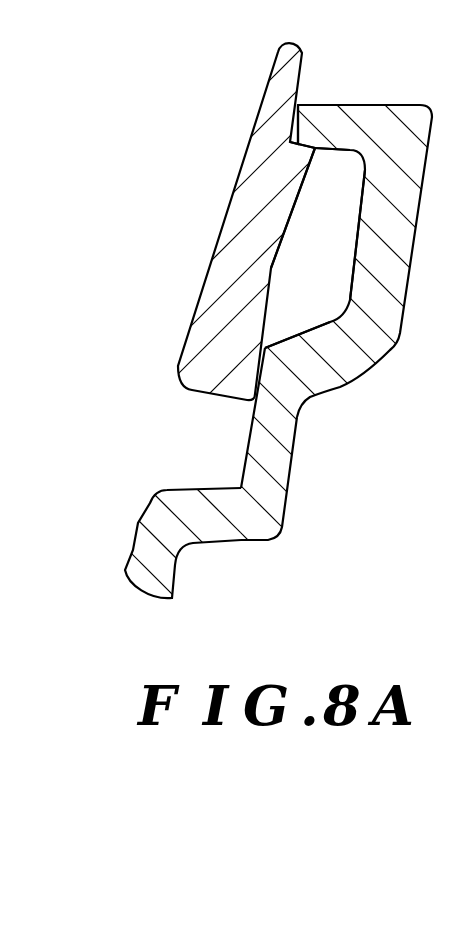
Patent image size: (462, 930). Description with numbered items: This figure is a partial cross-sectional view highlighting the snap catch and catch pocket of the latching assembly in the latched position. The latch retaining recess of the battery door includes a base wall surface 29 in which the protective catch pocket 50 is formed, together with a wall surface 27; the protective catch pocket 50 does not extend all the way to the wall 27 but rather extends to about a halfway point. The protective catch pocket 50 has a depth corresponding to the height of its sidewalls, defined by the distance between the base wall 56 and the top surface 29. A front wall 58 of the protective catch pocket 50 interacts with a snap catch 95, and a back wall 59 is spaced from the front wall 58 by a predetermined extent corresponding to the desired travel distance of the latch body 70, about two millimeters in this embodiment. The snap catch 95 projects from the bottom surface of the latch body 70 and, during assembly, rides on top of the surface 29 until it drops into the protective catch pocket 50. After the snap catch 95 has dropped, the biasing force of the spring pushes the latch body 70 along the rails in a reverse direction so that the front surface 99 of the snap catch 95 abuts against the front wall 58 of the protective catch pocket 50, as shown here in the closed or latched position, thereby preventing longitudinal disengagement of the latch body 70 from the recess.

The wall surface 27 is at (167, 490).
The base wall surface 29 is at (219, 425).
The protective catch pocket 50 is at (328, 292).
The base wall 56 is at (358, 218).
The front wall 58 is at (331, 150).
The back wall 59 is at (303, 335).
The latch body 70 is at (212, 297).
The snap catch 95 is at (295, 205).
The front surface 99 is at (306, 133).